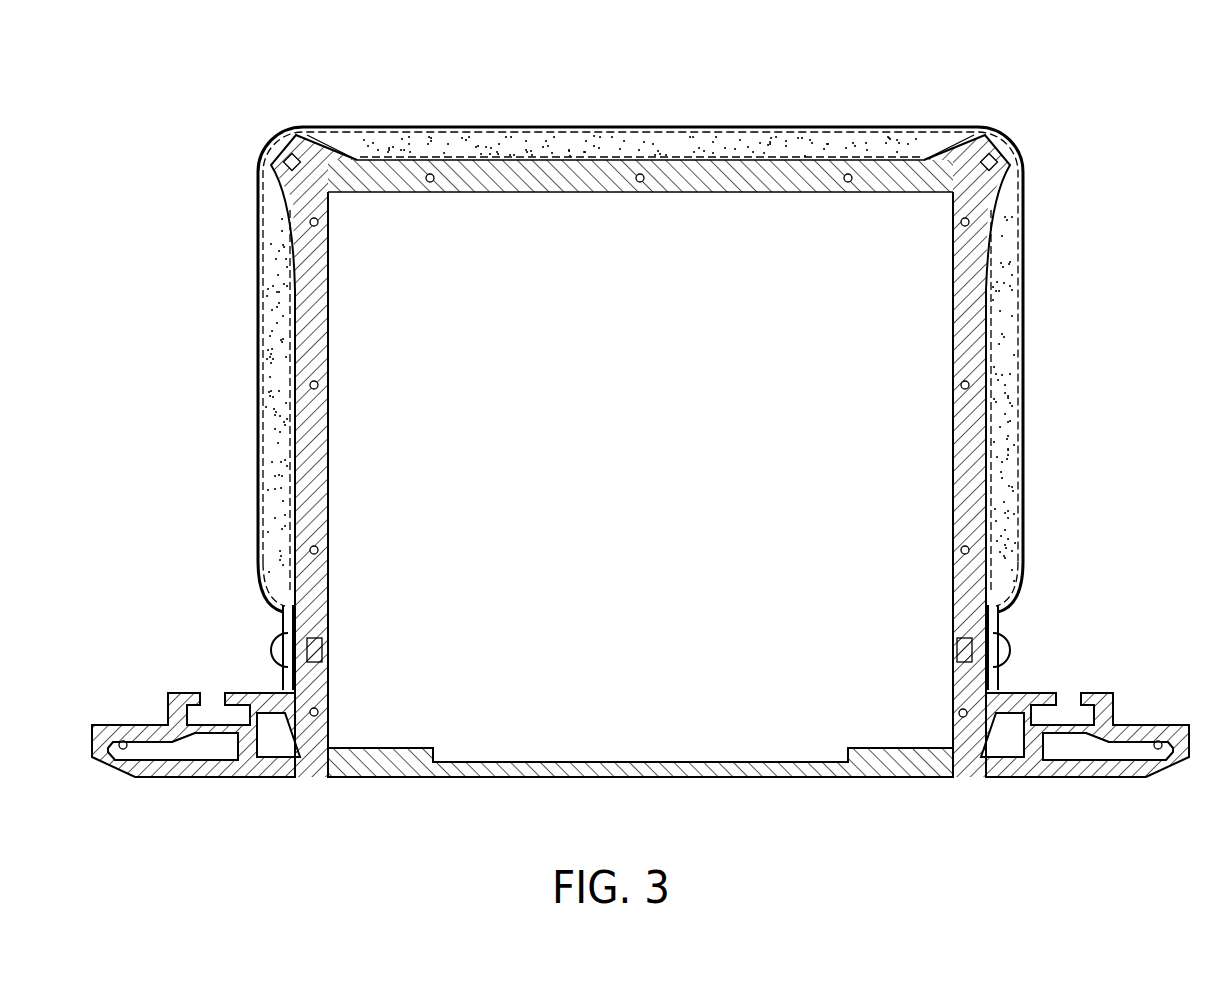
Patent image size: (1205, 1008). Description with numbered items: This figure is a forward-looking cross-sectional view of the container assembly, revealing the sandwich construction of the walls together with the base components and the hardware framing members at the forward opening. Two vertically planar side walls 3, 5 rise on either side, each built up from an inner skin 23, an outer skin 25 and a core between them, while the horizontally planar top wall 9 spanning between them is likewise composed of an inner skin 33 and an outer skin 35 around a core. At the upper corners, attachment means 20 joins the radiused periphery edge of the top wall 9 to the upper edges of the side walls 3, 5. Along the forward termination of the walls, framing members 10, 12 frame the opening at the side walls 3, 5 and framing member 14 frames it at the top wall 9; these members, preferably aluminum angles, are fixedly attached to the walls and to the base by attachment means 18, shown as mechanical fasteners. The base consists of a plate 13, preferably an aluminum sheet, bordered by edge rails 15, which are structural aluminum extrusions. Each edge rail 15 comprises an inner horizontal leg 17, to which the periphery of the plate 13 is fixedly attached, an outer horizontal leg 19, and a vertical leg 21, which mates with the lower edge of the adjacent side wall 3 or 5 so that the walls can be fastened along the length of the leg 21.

The side wall 3 is at (278, 402).
The side wall 5 is at (1003, 402).
The top wall 9 is at (655, 140).
The framing member 10 is at (325, 530).
The framing member 12 is at (955, 617).
The plate 13 is at (612, 760).
The framing member 14 is at (553, 180).
The edge rail 15 is at (298, 778).
The inner horizontal leg 17 is at (408, 748).
The attachment means 18 is at (320, 224).
The outer horizontal leg 19 is at (248, 762).
The attachment means 20 is at (300, 172).
The vertical leg 21 is at (300, 700).
The inner skin 23 is at (302, 478).
The outer skin 25 is at (258, 470).
The inner skin 33 is at (692, 172).
The outer skin 35 is at (788, 130).